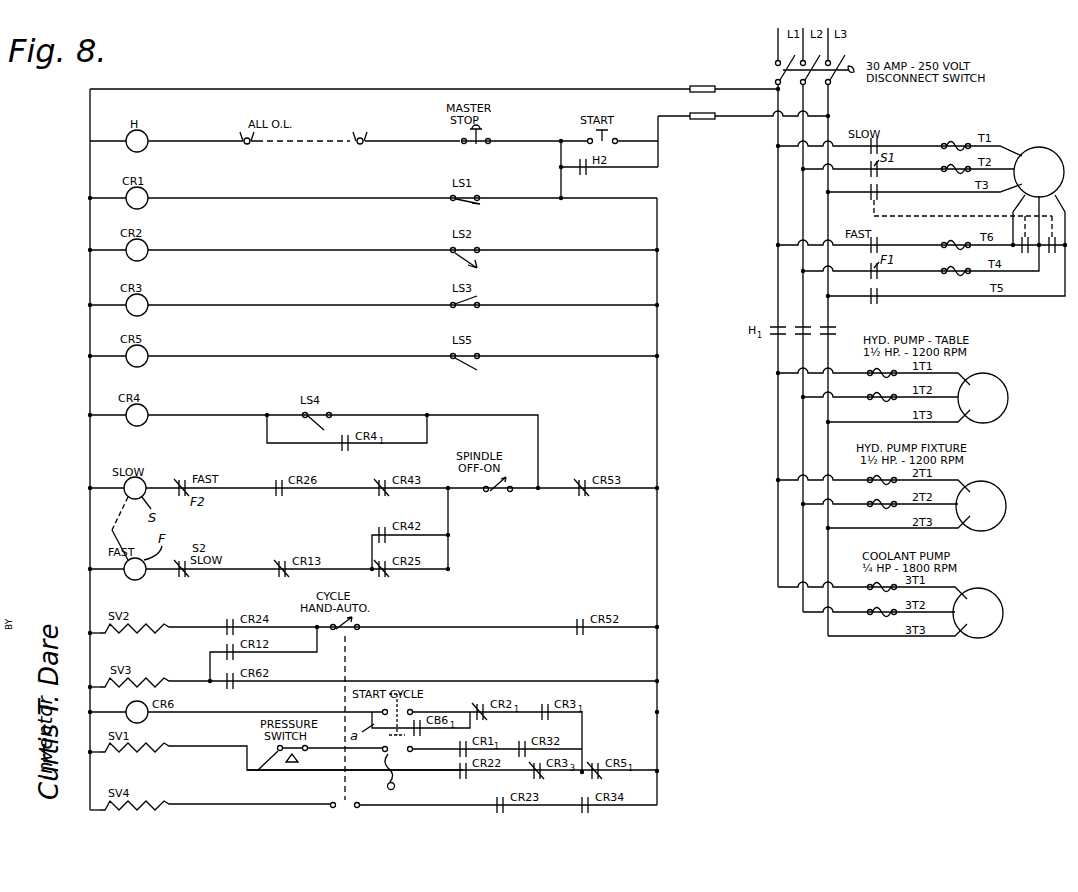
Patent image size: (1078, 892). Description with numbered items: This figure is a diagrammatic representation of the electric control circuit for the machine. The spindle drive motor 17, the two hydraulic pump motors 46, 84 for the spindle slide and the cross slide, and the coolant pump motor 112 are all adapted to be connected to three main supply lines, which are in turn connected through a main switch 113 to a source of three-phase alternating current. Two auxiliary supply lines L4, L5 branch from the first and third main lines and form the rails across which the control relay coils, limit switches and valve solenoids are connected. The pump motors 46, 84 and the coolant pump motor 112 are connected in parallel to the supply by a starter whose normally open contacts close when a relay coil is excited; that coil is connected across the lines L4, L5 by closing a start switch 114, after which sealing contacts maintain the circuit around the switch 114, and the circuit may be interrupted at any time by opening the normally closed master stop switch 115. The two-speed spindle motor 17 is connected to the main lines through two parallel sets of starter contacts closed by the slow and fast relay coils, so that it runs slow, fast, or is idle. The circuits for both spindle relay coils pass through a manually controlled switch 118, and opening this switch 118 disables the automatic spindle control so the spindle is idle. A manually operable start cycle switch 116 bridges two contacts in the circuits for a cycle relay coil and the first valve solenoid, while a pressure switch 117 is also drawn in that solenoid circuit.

The spindle drive motor 17 is at (1039, 147).
The hydraulic pump motor 46 is at (1002, 407).
The hydraulic pump motor 84 is at (1000, 500).
The coolant pump motor 112 is at (996, 604).
The main switch 113 is at (770, 66).
The start switch 114 is at (574, 130).
The master stop switch 115 is at (460, 148).
The start cycle switch 116 is at (426, 707).
The pressure switch 117 is at (265, 770).
The manually controlled switch 118 is at (500, 498).
The auxiliary supply line L4 is at (90, 237).
The auxiliary supply line L5 is at (660, 238).